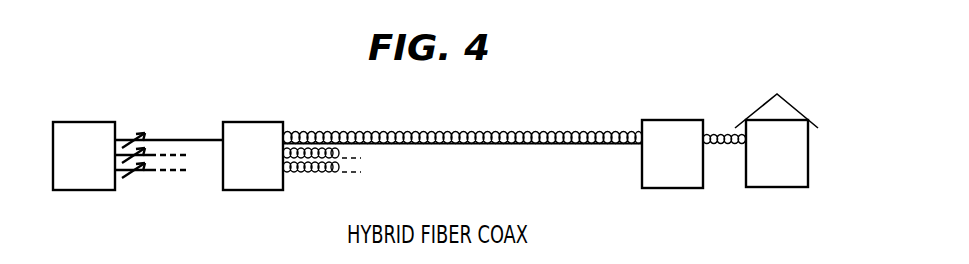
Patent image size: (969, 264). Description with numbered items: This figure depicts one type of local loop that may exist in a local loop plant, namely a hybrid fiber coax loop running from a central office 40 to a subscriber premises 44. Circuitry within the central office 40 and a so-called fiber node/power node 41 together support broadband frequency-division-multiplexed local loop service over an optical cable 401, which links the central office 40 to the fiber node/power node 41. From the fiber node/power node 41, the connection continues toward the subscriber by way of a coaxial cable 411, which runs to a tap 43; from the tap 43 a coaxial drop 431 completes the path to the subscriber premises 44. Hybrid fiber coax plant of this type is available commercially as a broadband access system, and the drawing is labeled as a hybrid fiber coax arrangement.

The central office 40 is at (83, 122).
The optical cable 401 is at (187, 139).
The fiber node/power node 41 is at (247, 122).
The coaxial cable 411 is at (352, 132).
The tap 43 is at (688, 120).
The coaxial drop 431 is at (720, 131).
The subscriber premises 44 is at (803, 117).